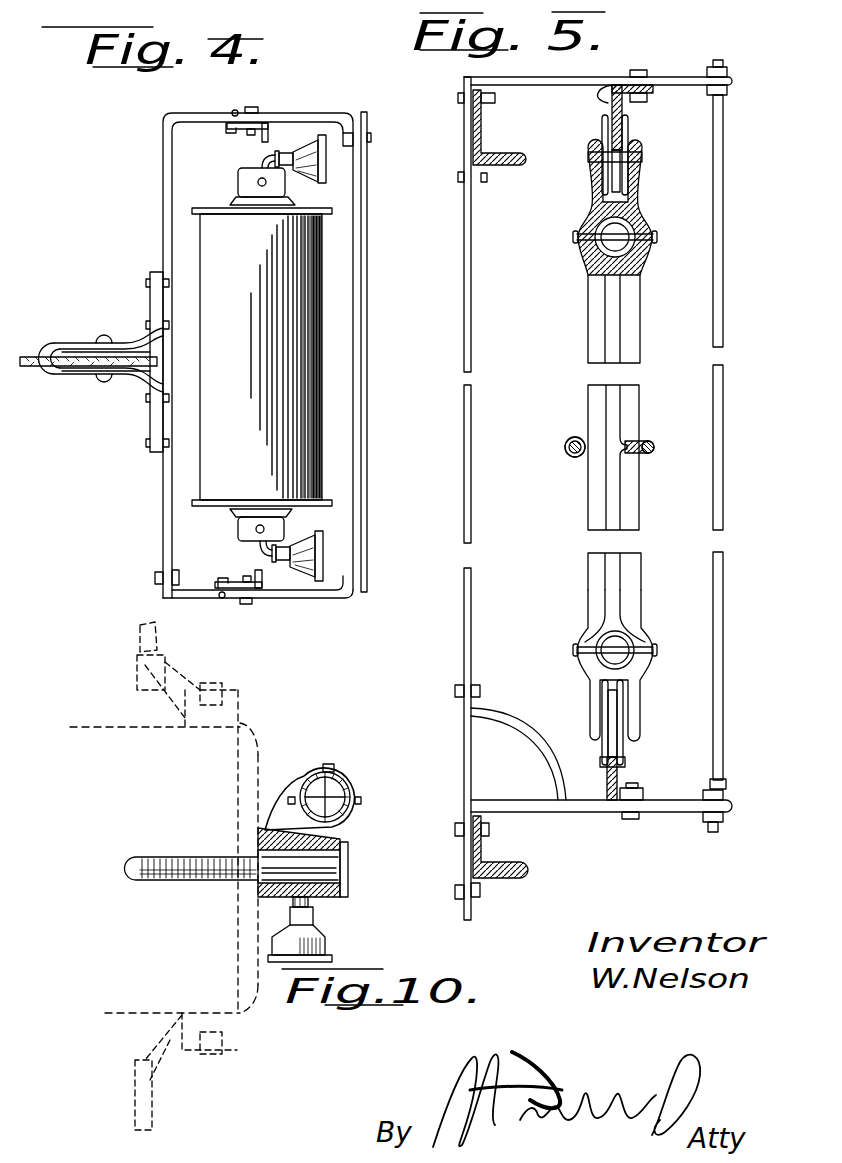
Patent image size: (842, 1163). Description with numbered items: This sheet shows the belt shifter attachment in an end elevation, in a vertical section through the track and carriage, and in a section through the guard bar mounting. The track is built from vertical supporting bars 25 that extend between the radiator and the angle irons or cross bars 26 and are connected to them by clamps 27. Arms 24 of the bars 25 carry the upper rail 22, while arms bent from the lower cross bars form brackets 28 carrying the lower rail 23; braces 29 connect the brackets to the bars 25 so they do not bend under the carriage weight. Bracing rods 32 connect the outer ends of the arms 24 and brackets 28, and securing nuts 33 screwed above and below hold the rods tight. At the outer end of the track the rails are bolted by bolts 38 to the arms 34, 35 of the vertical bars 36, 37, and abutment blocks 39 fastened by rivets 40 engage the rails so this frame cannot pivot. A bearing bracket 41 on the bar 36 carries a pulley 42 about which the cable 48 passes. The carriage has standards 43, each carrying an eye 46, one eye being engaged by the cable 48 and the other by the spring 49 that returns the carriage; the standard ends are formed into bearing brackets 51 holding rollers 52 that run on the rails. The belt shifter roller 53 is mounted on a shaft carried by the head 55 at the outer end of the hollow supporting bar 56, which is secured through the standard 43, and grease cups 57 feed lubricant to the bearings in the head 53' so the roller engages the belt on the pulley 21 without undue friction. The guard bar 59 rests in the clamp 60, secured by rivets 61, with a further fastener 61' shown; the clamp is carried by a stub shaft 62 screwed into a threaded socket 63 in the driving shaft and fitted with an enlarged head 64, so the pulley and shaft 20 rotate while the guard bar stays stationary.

In FIG. 10, the shaft 20 is at (88, 725).
In FIG. 10, the pulley 21 is at (133, 645).
In FIG. 4, the upper rail 22 is at (265, 125).
In FIG. 5, the upper rail 22 is at (605, 78).
In FIG. 5, the lower rail 23 is at (607, 782).
In FIG. 5, the arms 24 is at (520, 82).
In FIG. 5, the vertical supporting bars 25 is at (462, 356).
In FIG. 5, the cross bars 26 is at (513, 160).
In FIG. 5, the clamps 27 is at (520, 150).
In FIG. 5, the brackets 28 is at (666, 812).
In FIG. 5, the braces 29 is at (520, 738).
In FIG. 5, the bracing rods 32 is at (724, 268).
In FIG. 5, the securing nuts 33 is at (729, 90).
In FIG. 4, the arm 34 is at (190, 118).
In FIG. 4, the arm 35 is at (330, 590).
In FIG. 4, the vertical bar 36 is at (163, 517).
In FIG. 4, the vertical bar 37 is at (367, 376).
In FIG. 4, the bolts 38 is at (256, 107).
In FIG. 4, the abutment blocks 39 is at (228, 122).
In FIG. 4, the rivets 40 is at (235, 108).
In FIG. 4, the bearing bracket 41 is at (137, 340).
In FIG. 4, the pulley 42 is at (60, 351).
In FIG. 5, the standards 43 is at (630, 307).
In FIG. 5, the eye 46 is at (570, 440).
In FIG. 4, the cable 48 is at (52, 366).
In FIG. 5, the spring 49 is at (572, 456).
In FIG. 5, the bearing brackets 51 is at (588, 188).
In FIG. 5, the rollers 52 is at (625, 130).
In FIG. 4, the roller 53 is at (303, 357).
In FIG. 4, the head 53' is at (302, 357).
In FIG. 4, the head 55 is at (238, 181).
In FIG. 5, the hollow supporting bar 56 is at (633, 232).
In FIG. 4, the grease cups 57 is at (318, 160).
In FIG. 10, the guard bar 59 is at (347, 785).
In FIG. 10, the clamp 60 is at (300, 775).
In FIG. 10, the rivets 61 is at (335, 773).
In FIG. 10, the lug 61' is at (384, 804).
In FIG. 10, the stub shaft 62 is at (348, 866).
In FIG. 10, the threaded socket 63 is at (200, 876).
In FIG. 10, the enlarged head 64 is at (347, 860).